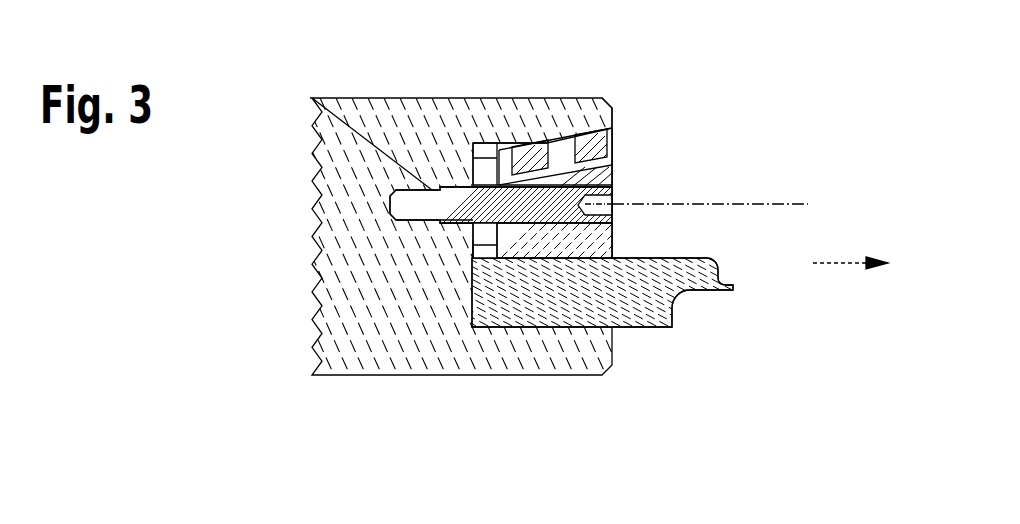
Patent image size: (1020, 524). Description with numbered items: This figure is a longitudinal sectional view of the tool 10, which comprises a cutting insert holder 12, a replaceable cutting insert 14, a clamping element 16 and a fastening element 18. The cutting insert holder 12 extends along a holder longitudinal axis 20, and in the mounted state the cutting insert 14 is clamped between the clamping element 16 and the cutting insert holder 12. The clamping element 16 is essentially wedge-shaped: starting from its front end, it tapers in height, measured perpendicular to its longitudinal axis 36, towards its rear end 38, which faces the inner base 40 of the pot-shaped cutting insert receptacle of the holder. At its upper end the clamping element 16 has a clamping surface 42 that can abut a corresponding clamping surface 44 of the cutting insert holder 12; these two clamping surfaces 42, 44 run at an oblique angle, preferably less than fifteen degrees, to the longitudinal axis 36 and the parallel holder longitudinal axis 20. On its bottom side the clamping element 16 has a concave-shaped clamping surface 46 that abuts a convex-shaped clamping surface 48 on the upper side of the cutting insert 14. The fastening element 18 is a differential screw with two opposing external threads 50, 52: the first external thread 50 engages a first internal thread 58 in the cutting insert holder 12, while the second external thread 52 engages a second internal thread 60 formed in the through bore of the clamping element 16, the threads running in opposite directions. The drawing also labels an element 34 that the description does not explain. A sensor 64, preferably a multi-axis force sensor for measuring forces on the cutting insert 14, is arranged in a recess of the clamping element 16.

The tool 10 is at (733, 110).
The cutting insert holder 12 is at (368, 355).
The cutting insert 14 is at (637, 305).
The clamping element 16 is at (503, 240).
The fastening element 18 is at (461, 187).
The holder longitudinal axis 20 is at (833, 265).
The pin 34 is at (612, 176).
The longitudinal axis of the clamping element 36 is at (777, 205).
The rear end of the clamping element 38 is at (478, 248).
The inner base of the cutting insert receptacle 40 is at (470, 226).
The clamping surface of the clamping element 42 is at (621, 76).
The clamping surface of the cutting insert holder 44 is at (612, 118).
The concave-shaped clamping surface 46 is at (557, 341).
The convex-shaped clamping surface 48 is at (567, 245).
The first external thread 50 is at (414, 124).
The second external thread 52 is at (616, 239).
The first internal thread 58 is at (448, 190).
The second internal thread 60 is at (612, 237).
The sensor 64 is at (612, 140).